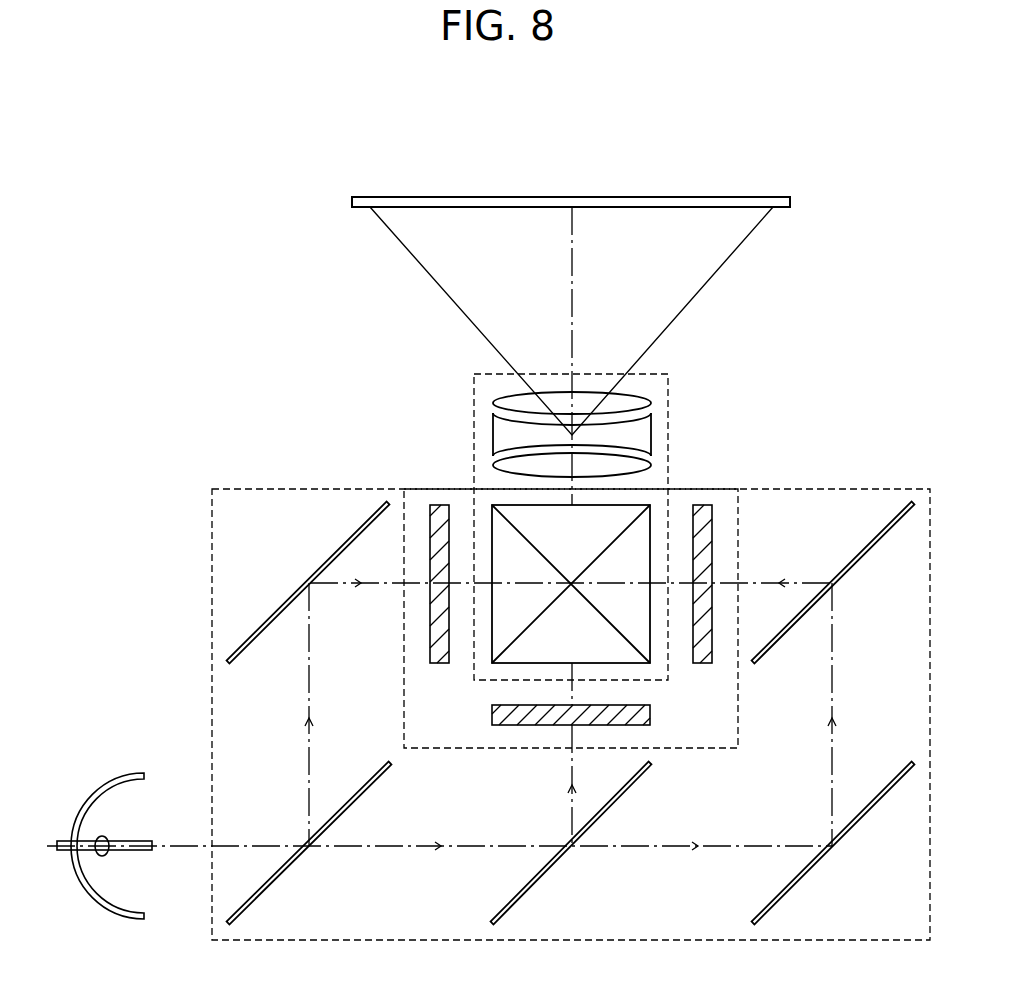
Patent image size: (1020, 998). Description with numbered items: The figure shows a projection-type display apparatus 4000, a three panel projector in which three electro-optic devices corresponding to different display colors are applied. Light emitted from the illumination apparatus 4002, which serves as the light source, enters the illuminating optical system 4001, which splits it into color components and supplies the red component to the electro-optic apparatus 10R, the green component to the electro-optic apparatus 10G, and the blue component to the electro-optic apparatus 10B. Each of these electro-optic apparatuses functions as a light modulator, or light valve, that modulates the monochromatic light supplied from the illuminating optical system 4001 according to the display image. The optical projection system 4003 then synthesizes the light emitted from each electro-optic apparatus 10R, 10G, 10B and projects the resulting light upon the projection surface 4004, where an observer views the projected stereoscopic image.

The projection-type display apparatus 4000 is at (245, 422).
The illuminating optical system 4001 is at (887, 488).
The illumination apparatus 4002 is at (125, 775).
The optical projection system 4003 is at (668, 411).
The projection surface 4004 is at (662, 197).
The electro-optic apparatus 10R is at (440, 513).
The electro-optic apparatus 10G is at (640, 713).
The electro-optic apparatus 10B is at (703, 513).